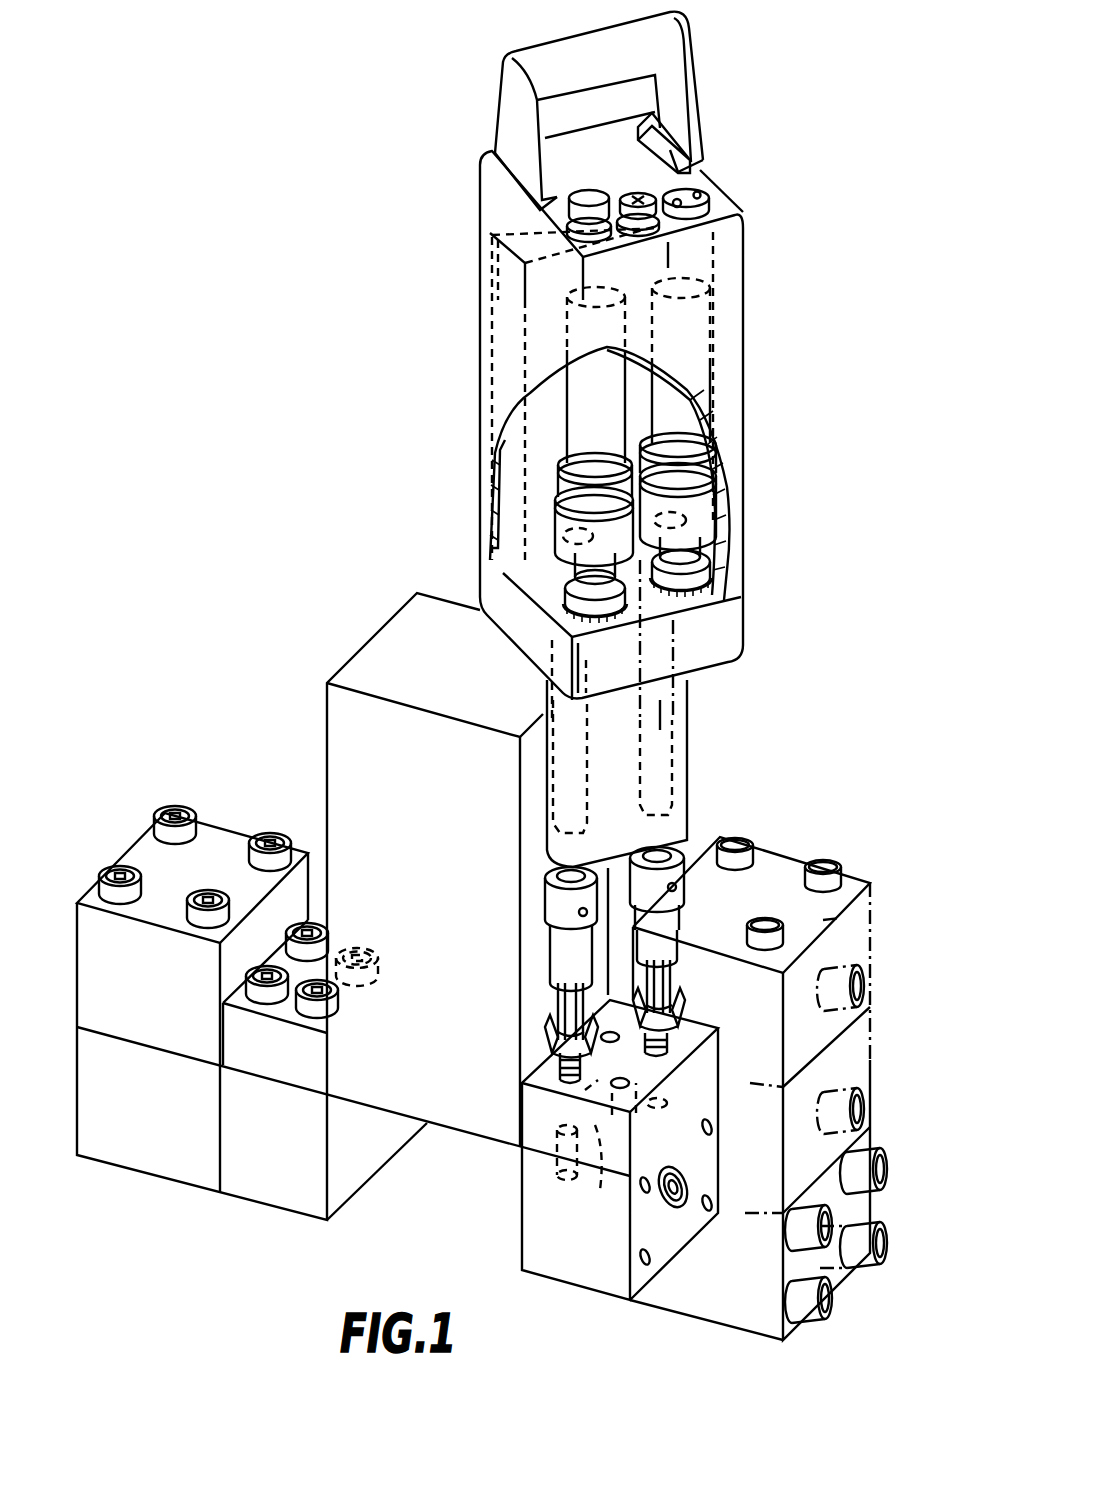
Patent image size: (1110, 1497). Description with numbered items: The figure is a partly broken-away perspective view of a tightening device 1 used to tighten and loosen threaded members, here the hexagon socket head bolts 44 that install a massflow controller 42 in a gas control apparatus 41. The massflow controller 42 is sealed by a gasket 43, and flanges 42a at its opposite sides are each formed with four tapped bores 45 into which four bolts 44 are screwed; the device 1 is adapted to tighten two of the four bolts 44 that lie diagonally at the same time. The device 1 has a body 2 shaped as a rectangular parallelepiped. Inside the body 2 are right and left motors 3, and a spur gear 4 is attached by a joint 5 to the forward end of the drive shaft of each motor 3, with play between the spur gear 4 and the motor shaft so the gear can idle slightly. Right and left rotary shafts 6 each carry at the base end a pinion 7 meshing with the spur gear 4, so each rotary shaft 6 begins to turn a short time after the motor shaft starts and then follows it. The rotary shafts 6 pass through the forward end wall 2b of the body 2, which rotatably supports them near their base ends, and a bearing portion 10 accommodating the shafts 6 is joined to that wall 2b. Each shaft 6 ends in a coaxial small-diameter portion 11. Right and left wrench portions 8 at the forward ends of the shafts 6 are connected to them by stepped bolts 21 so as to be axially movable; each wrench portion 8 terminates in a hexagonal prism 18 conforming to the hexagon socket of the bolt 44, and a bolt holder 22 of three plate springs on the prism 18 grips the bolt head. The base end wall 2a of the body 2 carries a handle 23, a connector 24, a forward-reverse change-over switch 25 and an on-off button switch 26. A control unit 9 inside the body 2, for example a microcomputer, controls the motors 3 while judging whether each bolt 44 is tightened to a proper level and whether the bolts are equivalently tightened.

The tightening device 1 is at (358, 237).
The body 2 is at (752, 365).
The base end wall 2a is at (650, 133).
The forward end wall 2b is at (712, 665).
The motors 3 is at (597, 432).
The spur gear 4 is at (715, 580).
The joint 5 is at (707, 543).
The rotary shafts 6 is at (550, 787).
The pinion 7 is at (733, 500).
The wrench portions 8 is at (548, 978).
The control unit 9 is at (498, 335).
The bearing portion 10 is at (663, 728).
The small-diameter portion 11 is at (546, 890).
The hexagonal prism 18 is at (555, 1013).
The stepped bolts 21 is at (550, 942).
The bolt holder 22 is at (545, 1045).
The handle 23 is at (655, 45).
The connector 24 is at (690, 185).
The forward-reverse change-over switch 25 is at (657, 224).
The on-off button switch 26 is at (570, 222).
The gas control apparatus 41 is at (298, 1236).
The massflow controller 42 is at (447, 1115).
The flanges 42a is at (700, 1092).
The gasket 43 is at (600, 1115).
The hexagon socket head bolts 44 is at (560, 1100).
The tapped bores 45 is at (600, 1130).